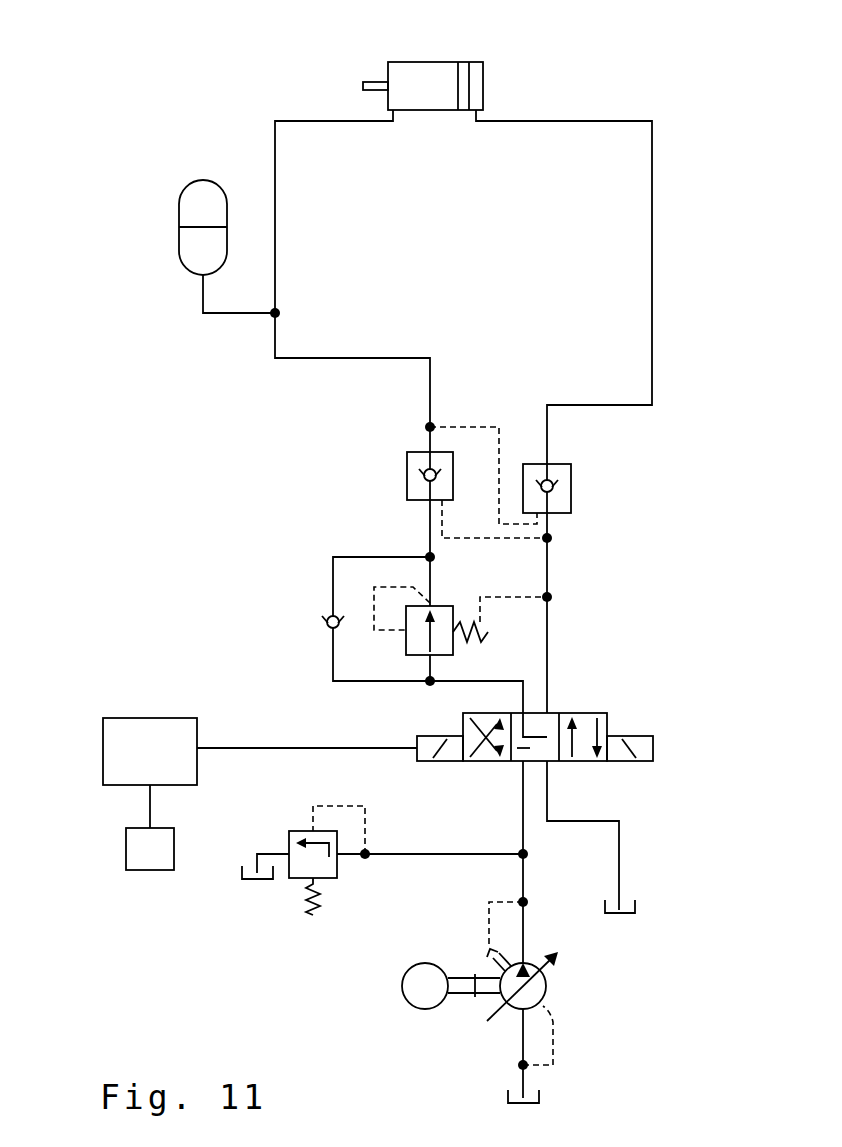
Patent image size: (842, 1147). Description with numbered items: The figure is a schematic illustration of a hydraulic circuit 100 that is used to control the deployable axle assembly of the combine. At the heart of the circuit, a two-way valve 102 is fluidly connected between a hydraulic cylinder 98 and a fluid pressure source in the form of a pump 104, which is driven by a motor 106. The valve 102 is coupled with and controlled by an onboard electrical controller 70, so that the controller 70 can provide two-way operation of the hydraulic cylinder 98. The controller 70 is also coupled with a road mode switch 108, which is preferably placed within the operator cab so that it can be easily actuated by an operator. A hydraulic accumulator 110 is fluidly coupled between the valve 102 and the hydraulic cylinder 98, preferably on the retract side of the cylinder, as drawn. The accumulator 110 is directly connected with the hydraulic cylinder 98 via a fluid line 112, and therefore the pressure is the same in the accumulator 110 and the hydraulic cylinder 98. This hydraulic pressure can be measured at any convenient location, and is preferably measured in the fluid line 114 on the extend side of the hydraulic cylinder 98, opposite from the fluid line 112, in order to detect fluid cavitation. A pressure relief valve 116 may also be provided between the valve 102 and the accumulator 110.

The controller 70 is at (165, 764).
The hydraulic cylinder 98 is at (434, 62).
The hydraulic circuit 100 is at (623, 90).
The two-way valve 102 is at (583, 713).
The pump 104 is at (548, 983).
The motor 106 is at (413, 1004).
The road mode switch 108 is at (126, 848).
The hydraulic accumulator 110 is at (179, 238).
The fluid line 112 is at (297, 120).
The fluid line 114 is at (652, 163).
The pressure relief valve 116 is at (320, 541).